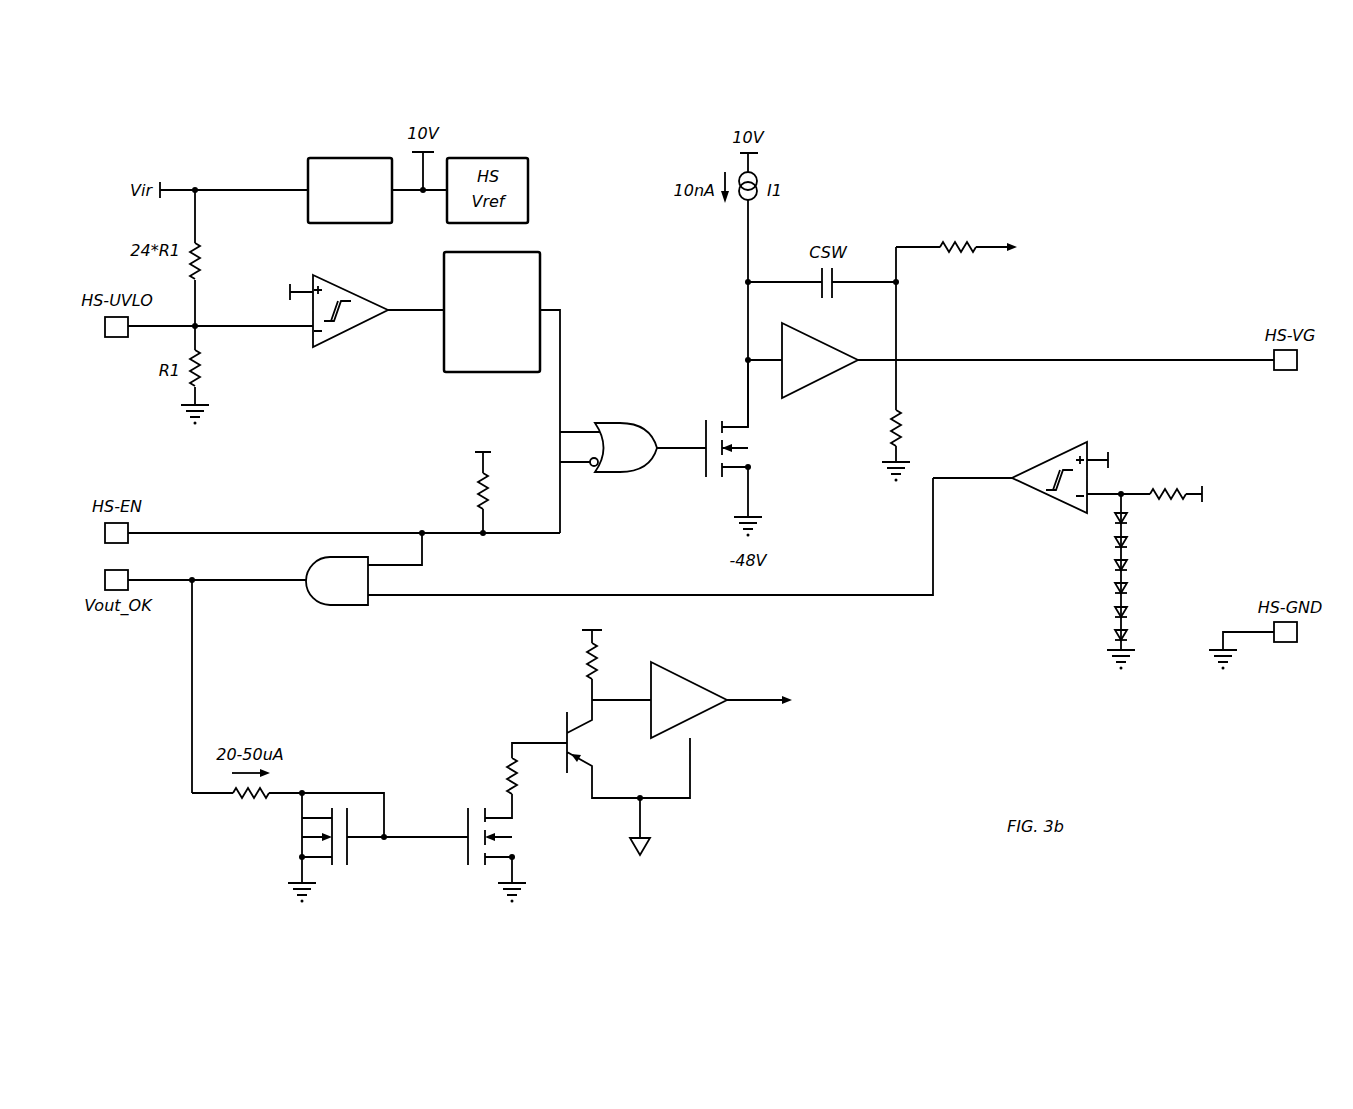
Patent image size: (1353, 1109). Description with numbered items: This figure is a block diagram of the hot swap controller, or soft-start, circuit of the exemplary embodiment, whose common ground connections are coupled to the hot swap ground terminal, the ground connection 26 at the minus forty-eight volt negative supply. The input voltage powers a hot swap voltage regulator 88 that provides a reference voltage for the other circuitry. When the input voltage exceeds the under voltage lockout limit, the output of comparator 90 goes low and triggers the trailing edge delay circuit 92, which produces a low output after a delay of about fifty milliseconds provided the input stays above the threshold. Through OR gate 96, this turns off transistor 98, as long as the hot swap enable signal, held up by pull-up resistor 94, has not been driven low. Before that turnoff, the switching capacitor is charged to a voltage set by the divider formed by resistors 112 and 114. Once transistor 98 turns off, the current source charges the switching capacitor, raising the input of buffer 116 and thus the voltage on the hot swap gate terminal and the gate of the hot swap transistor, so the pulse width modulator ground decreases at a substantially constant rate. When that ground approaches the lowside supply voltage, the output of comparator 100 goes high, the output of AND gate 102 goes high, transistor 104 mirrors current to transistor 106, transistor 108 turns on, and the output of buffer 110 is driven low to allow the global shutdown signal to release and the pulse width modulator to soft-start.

The ground connection 26 is at (202, 406).
The hot swap voltage regulator 88 is at (350, 158).
The comparator 90 is at (372, 298).
The trailing edge delay circuit 92 is at (540, 284).
The pull-up resistor 94 is at (478, 495).
The OR gate 96 is at (610, 424).
The transistor 98 is at (745, 428).
The comparator 100 is at (1068, 510).
The AND gate 102 is at (348, 605).
The transistor 104 is at (300, 838).
The transistor 106 is at (468, 845).
The transistor 108 is at (565, 733).
The buffer 110 is at (690, 680).
The resistor 112 is at (942, 250).
The resistor 114 is at (905, 428).
The buffer 116 is at (820, 338).